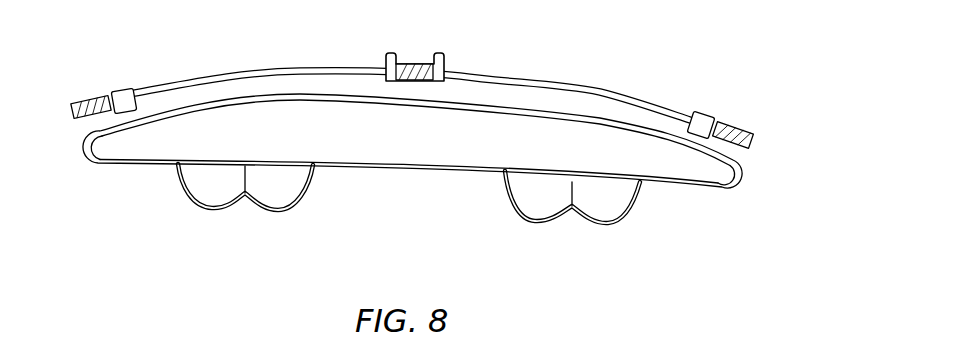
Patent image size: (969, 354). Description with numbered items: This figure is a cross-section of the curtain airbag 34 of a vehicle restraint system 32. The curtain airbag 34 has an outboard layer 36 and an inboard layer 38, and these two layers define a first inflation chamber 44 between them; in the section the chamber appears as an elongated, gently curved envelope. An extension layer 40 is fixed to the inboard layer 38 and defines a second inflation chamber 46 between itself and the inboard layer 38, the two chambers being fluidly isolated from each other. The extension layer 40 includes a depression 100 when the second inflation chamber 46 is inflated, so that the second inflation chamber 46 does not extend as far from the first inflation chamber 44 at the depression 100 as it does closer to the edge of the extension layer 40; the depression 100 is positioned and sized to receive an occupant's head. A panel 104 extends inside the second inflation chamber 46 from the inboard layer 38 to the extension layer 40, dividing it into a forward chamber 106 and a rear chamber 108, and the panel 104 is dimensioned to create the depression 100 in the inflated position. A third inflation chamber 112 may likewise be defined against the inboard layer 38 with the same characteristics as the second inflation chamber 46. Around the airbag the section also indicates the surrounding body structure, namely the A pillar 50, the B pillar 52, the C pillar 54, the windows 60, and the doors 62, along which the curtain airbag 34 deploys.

The restraint system 32 is at (763, 186).
The curtain airbag 34 is at (699, 191).
The outboard layer 36 is at (474, 95).
The inboard layer 38 is at (440, 172).
The extension layer 40 is at (308, 196).
The first inflation chamber 44 is at (707, 170).
The second inflation chamber 46 is at (609, 192).
The A pillar 50 is at (740, 124).
The B pillar 52 is at (413, 53).
The C pillar 54 is at (84, 96).
The window 60 is at (258, 69).
The door 62 is at (122, 89).
The depression 100 is at (237, 205).
The panel 104 is at (241, 181).
The forward chamber 106 is at (268, 190).
The rear chamber 108 is at (225, 195).
The third inflation chamber 112 is at (207, 175).